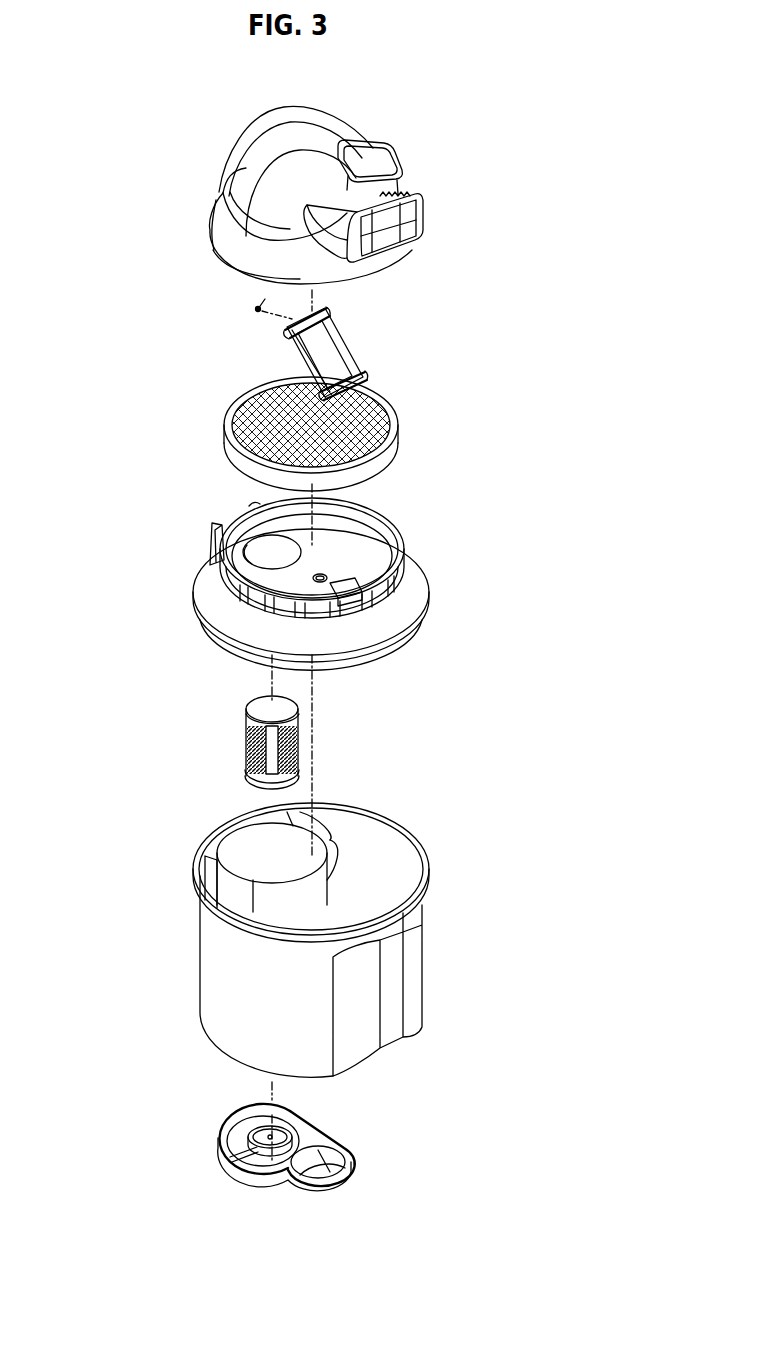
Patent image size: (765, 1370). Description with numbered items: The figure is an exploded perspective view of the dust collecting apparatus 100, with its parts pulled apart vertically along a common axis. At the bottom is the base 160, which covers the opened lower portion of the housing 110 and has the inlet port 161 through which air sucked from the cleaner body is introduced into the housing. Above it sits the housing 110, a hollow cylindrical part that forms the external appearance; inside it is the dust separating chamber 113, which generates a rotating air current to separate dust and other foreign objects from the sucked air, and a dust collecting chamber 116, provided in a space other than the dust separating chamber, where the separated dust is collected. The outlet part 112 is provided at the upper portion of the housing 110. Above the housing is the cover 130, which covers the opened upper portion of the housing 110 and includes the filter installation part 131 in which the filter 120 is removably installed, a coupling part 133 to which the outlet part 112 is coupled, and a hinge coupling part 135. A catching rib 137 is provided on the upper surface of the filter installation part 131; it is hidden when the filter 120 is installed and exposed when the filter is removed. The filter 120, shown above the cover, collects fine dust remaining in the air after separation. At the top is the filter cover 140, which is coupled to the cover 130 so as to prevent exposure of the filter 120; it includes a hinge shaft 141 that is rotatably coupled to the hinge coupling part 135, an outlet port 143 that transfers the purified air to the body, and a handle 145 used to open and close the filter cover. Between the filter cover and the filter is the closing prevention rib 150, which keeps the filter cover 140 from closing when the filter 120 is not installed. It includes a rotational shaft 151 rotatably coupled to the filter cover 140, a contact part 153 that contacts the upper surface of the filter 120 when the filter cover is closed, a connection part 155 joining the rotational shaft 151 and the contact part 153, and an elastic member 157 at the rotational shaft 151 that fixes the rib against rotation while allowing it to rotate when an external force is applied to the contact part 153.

The dust collecting apparatus 100 is at (108, 230).
The housing 110 is at (198, 945).
The outlet part 112 is at (245, 752).
The dust separating chamber 113 is at (330, 838).
The dust collecting chamber 116 is at (376, 870).
The filter 120 is at (407, 427).
The cover 130 is at (432, 565).
The filter installation part 131 is at (356, 550).
The coupling part 133 is at (243, 538).
The hinge coupling part 135 is at (250, 505).
The catching rib 137 is at (400, 598).
The filter cover 140 is at (454, 141).
The hinge shaft 141 is at (220, 197).
The outlet port 143 is at (413, 215).
The handle 145 is at (336, 133).
The closing prevention rib 150 is at (347, 342).
The rotational shaft 151 is at (323, 310).
The contact part 153 is at (362, 378).
The connection part 155 is at (303, 360).
The elastic member 157 is at (258, 309).
The base 160 is at (225, 1116).
The inlet port 161 is at (348, 1160).